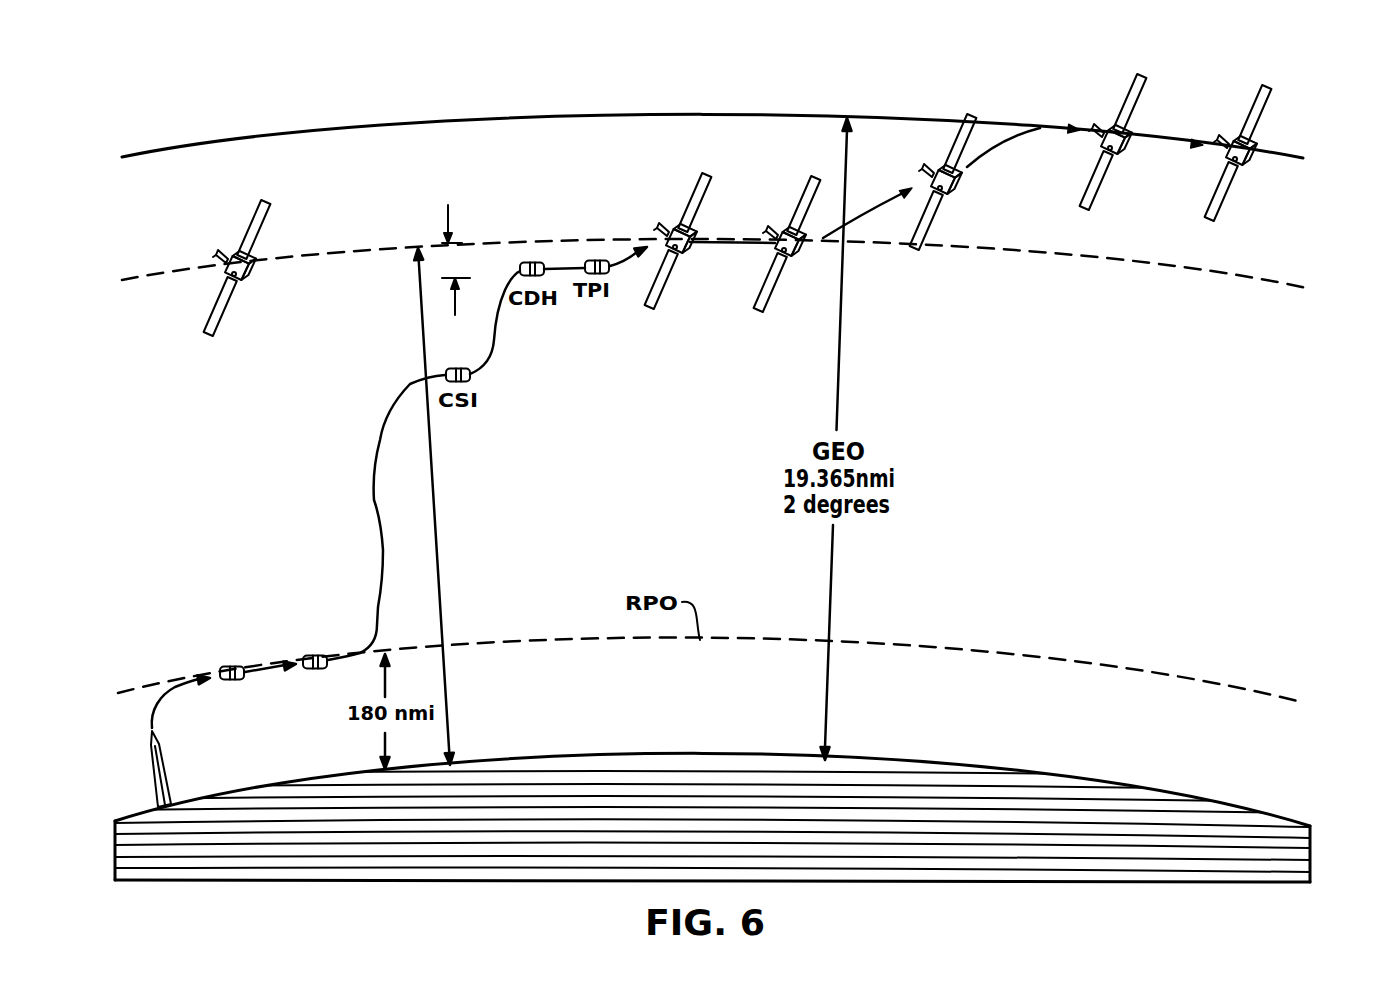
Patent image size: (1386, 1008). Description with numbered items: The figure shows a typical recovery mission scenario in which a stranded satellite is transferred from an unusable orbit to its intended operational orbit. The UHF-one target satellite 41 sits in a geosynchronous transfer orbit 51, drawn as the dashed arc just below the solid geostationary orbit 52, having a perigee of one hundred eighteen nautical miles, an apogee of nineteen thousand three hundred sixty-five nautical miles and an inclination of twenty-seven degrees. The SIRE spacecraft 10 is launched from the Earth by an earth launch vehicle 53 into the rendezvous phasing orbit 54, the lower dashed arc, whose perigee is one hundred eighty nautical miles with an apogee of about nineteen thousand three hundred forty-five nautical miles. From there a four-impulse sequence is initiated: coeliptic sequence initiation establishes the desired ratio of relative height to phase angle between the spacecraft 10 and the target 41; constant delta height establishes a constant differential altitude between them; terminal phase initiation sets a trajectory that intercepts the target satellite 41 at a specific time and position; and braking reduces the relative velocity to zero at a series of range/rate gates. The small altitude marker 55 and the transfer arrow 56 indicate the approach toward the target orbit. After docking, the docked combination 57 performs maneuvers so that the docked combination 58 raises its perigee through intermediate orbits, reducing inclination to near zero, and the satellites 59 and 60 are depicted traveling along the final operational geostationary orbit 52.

The SIRE spacecraft 10 is at (228, 682).
The UHF-1 target satellite 41 is at (248, 284).
The geosynchronous transfer orbit 51 is at (1233, 277).
The geostationary orbit 52 is at (1303, 147).
The earth launch vehicle 53 is at (167, 775).
The rendezvous phasing orbit 54 is at (512, 647).
The orbit altitude separation 55 is at (465, 262).
The transfer to sub-GEO orbit 56 is at (618, 262).
The docked combination 57 is at (668, 230).
The docked combination 58 is at (858, 222).
The satellite in geosynchronous orbit 59 is at (1105, 118).
The satellite in geosynchronous orbit 60 is at (1232, 120).